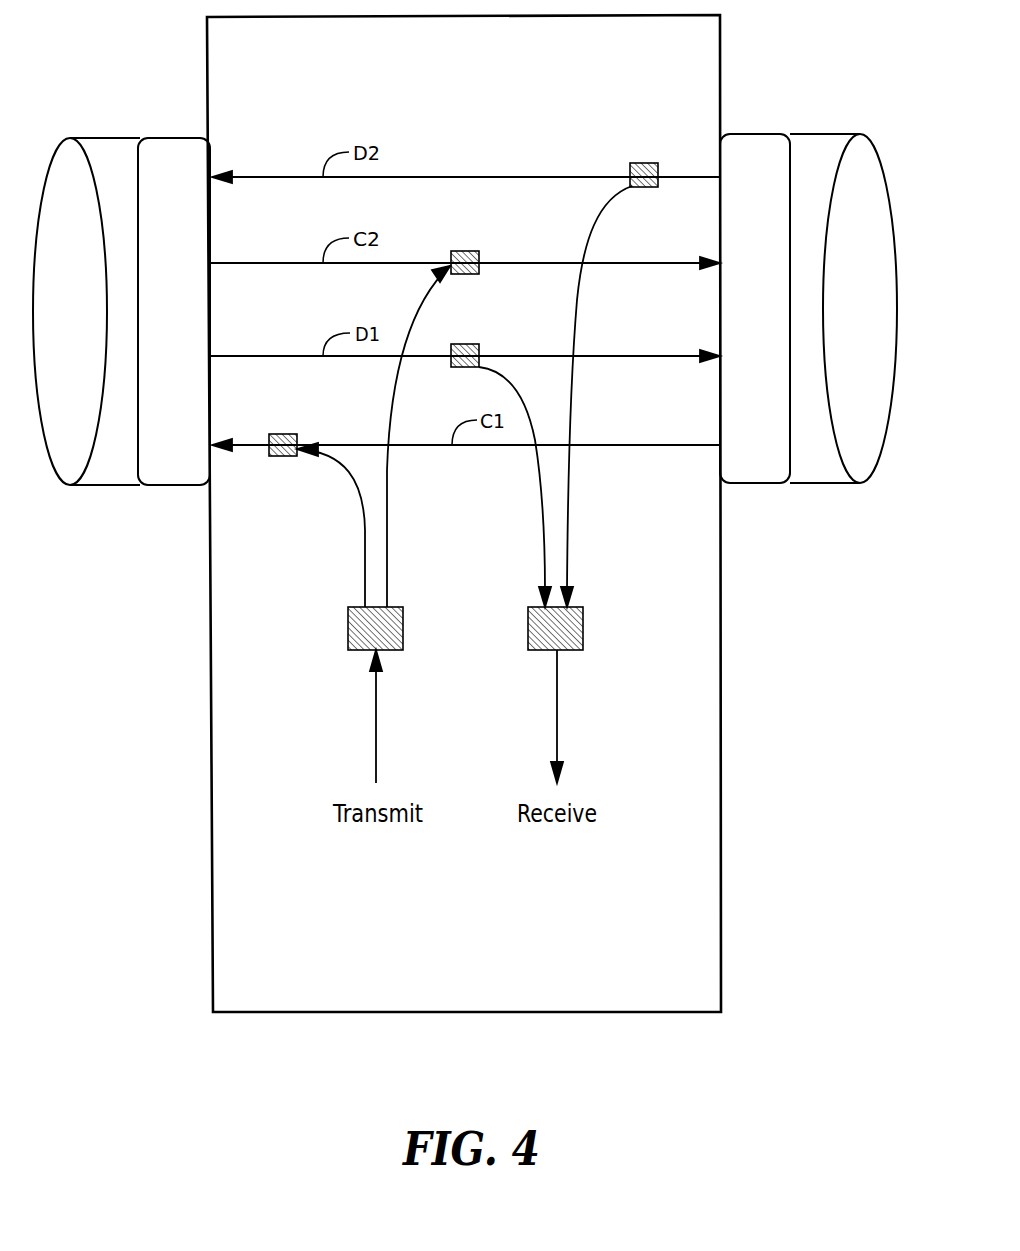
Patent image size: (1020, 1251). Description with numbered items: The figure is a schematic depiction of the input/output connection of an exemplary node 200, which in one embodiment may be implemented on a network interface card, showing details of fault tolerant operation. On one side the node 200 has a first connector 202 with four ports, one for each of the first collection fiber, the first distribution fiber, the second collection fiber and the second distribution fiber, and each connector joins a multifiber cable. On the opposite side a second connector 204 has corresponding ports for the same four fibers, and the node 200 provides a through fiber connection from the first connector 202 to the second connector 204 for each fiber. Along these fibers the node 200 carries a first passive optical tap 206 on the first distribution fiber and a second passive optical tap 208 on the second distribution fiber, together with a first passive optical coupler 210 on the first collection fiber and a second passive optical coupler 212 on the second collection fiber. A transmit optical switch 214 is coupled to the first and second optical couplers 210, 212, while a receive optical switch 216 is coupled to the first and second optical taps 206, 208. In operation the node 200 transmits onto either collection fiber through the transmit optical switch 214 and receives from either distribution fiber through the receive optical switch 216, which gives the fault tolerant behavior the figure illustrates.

The node 200 is at (290, 939).
The first connector 202 is at (119, 137).
The second connector 204 is at (807, 133).
The first passive optical tap 206 is at (465, 344).
The second passive optical tap 208 is at (643, 163).
The first passive optical coupler 210 is at (285, 433).
The second passive optical coupler 212 is at (465, 251).
The transmit optical switch 214 is at (348, 628).
The receive optical switch 216 is at (583, 628).